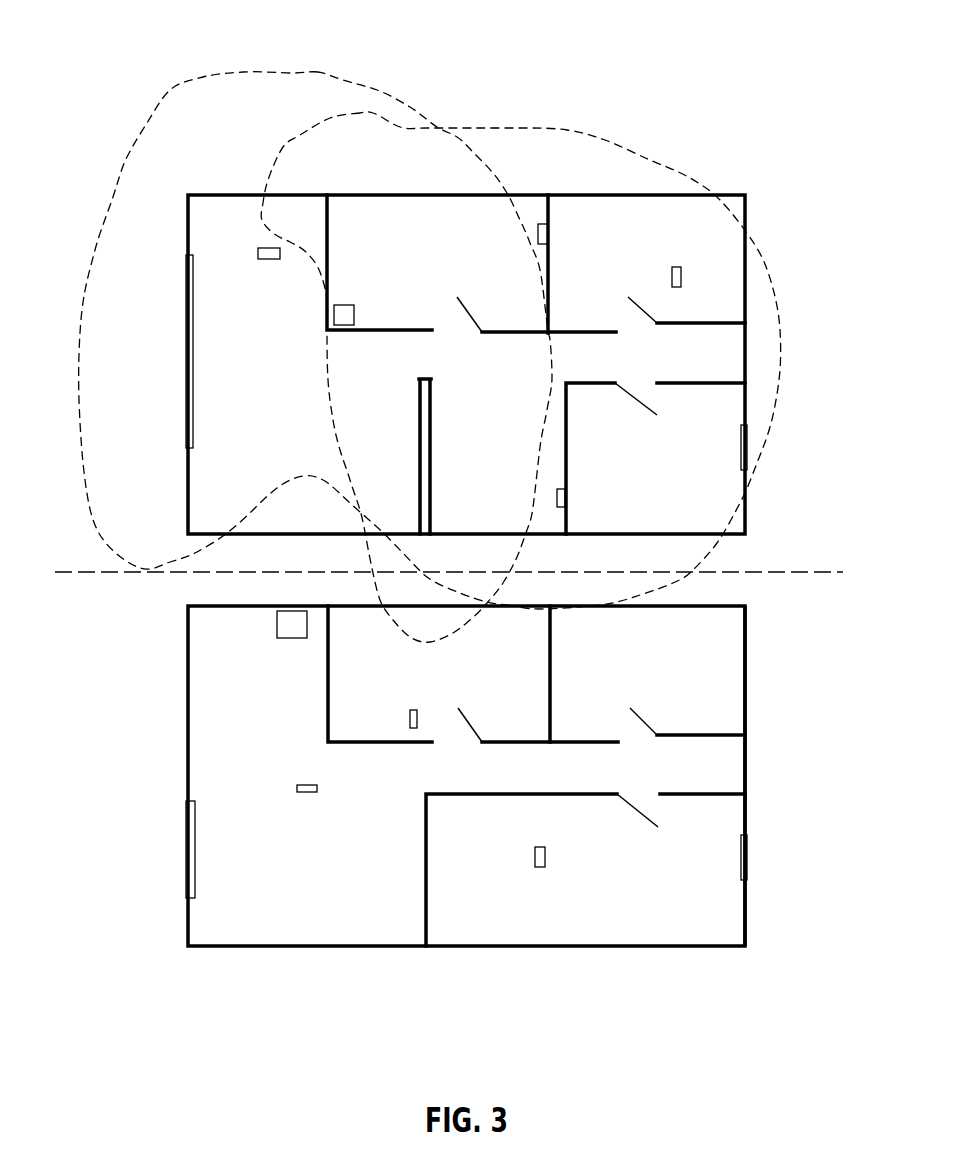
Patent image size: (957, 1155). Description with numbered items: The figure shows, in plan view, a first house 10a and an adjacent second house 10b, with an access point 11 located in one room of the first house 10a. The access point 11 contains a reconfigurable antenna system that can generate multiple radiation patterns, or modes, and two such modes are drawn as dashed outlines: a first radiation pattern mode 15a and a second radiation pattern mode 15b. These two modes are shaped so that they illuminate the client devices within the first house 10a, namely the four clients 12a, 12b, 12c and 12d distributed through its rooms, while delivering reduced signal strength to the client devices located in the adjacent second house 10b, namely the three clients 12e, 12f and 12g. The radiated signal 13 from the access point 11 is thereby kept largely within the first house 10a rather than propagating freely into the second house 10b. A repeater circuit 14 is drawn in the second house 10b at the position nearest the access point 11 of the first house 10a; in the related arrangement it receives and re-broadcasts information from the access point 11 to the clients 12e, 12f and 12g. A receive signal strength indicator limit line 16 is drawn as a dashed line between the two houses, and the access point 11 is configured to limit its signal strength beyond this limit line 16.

The first house 10a is at (412, 193).
The second house 10b is at (243, 947).
The access point 11 is at (340, 307).
The client 12a is at (270, 250).
The client 12b is at (538, 231).
The client 12c is at (688, 270).
The client 12d is at (557, 497).
The client 12e is at (302, 785).
The client 12f is at (540, 847).
The client 12g is at (415, 710).
The radiated signal 13 is at (762, 688).
The repeater circuit 14 is at (277, 623).
The first radiation pattern mode 15a is at (316, 76).
The second radiation pattern mode 15b is at (658, 163).
The property boundary line 16 is at (821, 572).